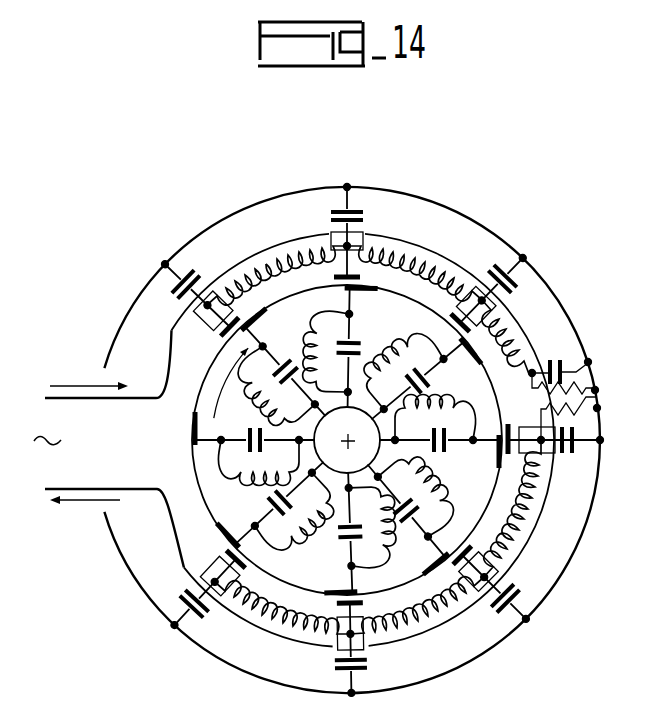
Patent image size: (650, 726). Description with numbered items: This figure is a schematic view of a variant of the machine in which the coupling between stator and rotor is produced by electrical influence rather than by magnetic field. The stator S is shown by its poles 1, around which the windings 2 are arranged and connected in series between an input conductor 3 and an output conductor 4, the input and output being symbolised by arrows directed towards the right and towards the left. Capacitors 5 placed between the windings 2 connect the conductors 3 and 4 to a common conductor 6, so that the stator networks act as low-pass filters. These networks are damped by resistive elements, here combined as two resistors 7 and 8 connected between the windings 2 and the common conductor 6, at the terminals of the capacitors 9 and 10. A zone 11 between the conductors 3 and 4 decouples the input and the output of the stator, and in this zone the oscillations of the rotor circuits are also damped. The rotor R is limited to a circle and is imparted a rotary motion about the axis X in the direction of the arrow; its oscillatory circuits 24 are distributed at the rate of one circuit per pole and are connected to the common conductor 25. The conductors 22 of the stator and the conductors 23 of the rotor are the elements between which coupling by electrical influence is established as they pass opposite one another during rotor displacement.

The poles 1 is at (232, 301).
The windings 2 is at (286, 278).
The input conductor 3 is at (92, 402).
The output conductor 4 is at (99, 486).
The capacitors 5 is at (358, 214).
The common conductor 6 is at (458, 215).
The resistor 7 is at (588, 376).
The resistor 8 is at (592, 430).
The capacitor 9 is at (548, 356).
The capacitor 10 is at (560, 452).
The zone 11 is at (36, 439).
The stator conductors 22 is at (216, 326).
The rotor conductors 23 is at (250, 331).
The oscillatory circuit 24 is at (234, 466).
The common conductor 25 is at (350, 472).
The rotor R is at (403, 299).
The stator S is at (550, 506).